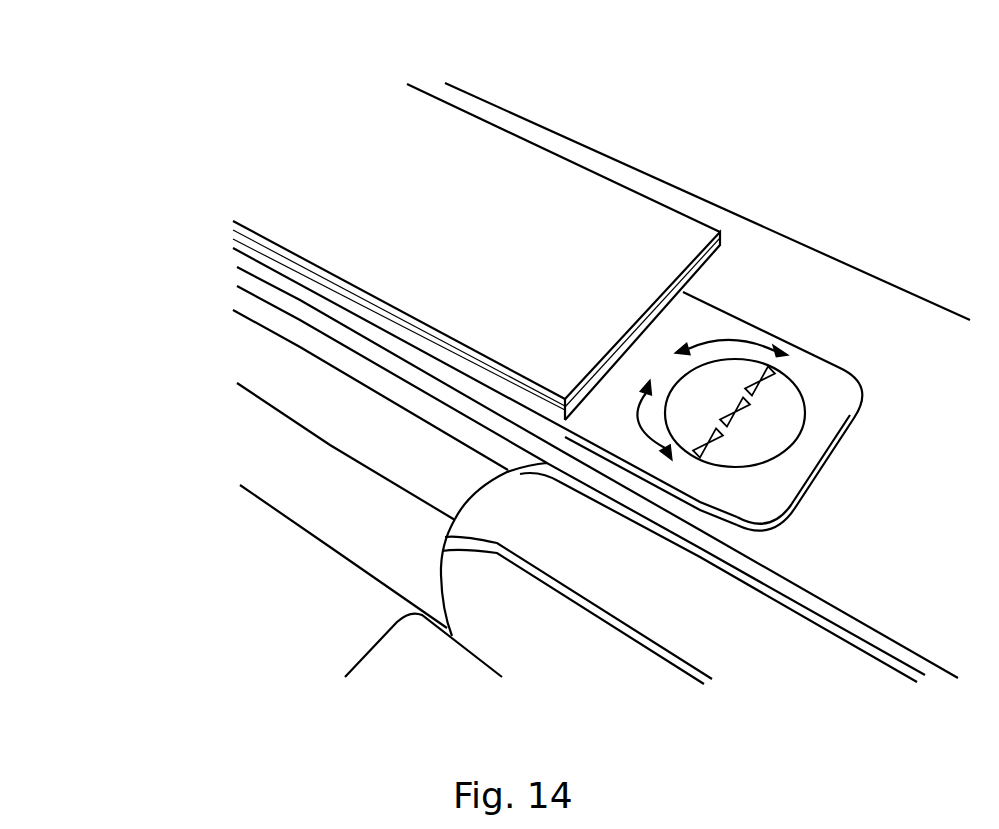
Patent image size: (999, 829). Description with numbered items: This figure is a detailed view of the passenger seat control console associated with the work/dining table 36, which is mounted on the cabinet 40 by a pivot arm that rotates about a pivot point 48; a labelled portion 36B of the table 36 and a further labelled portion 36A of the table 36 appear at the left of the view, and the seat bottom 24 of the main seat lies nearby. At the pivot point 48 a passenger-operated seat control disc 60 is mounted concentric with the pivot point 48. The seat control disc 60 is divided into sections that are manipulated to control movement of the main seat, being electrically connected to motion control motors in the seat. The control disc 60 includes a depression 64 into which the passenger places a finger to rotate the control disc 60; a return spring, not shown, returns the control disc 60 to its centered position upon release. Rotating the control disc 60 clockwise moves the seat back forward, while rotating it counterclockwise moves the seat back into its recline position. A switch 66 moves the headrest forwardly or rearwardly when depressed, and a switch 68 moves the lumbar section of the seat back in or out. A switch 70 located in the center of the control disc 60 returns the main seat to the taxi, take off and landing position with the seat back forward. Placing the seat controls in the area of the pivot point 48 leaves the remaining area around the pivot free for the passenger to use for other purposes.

The work/dining table 36 is at (558, 57).
The cabinet 40 is at (763, 258).
The cover plate 36B is at (470, 241).
The cover plate edge 36A is at (247, 243).
The seat control disc 60 is at (797, 436).
The depression 64 is at (707, 387).
The pivot point 48 is at (777, 400).
The switch 68 is at (760, 372).
The switch 70 is at (737, 420).
The switch 66 is at (716, 432).
The seat bottom 24 is at (678, 612).